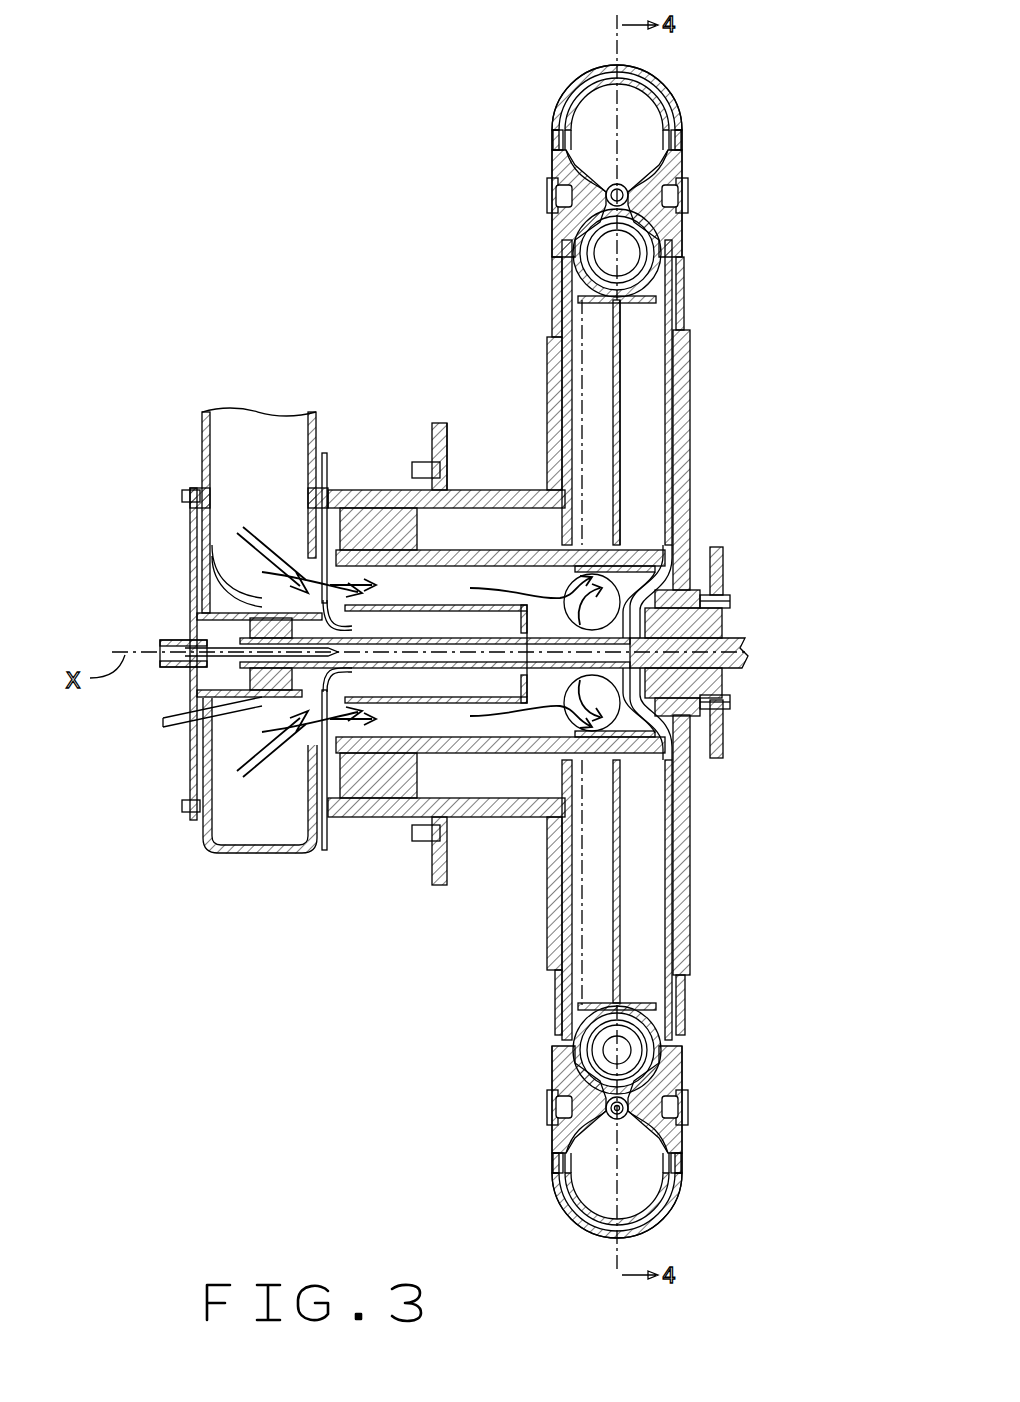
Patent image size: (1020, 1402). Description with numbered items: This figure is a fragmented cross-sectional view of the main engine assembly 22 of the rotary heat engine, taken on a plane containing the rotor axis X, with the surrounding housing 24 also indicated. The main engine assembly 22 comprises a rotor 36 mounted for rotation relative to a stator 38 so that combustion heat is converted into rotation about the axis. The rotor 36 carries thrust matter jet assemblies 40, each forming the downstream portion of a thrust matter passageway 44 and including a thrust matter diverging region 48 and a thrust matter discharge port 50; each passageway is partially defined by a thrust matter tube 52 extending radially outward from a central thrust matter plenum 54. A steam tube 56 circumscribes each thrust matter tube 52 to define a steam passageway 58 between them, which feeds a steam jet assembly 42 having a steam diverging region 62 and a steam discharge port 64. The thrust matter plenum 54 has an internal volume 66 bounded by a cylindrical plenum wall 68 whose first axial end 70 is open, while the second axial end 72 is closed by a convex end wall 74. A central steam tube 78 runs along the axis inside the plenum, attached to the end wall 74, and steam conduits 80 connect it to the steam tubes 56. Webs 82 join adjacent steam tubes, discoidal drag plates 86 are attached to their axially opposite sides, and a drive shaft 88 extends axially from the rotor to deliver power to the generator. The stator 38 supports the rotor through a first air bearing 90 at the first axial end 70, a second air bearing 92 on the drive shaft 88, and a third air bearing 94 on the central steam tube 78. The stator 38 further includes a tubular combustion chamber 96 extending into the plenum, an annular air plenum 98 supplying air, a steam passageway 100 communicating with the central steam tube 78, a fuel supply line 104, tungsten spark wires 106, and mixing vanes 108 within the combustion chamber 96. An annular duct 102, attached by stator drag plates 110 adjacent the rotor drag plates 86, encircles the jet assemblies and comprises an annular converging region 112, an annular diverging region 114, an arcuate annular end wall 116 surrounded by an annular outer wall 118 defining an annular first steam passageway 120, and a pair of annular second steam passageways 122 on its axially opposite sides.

The main engine assembly 22 is at (380, 158).
The housing 24 is at (432, 420).
The rotor 36 is at (652, 408).
The stator 38 is at (388, 820).
The thrust matter jet assembly 40 is at (662, 240).
The steam jet assembly 42 is at (607, 188).
The thrust matter passageway 44 is at (383, 580).
The thrust matter diverging region 48 is at (640, 1058).
The thrust matter discharge port 50 is at (592, 250).
The thrust matter tube 52 is at (658, 268).
The thrust matter plenum 54 is at (520, 720).
The steam tube 56 is at (570, 240).
The steam passageway 58 is at (588, 282).
The steam diverging region 62 is at (600, 1140).
The steam discharge port 64 is at (660, 166).
The internal volume 66 is at (400, 770).
The cylindrical plenum wall 68 is at (470, 520).
The first axial end 70 is at (342, 500).
The second axial end 72 is at (690, 610).
The end wall 74 is at (690, 700).
The central steam tube 78 is at (333, 745).
The steam conduit 80 is at (722, 606).
The web 82 is at (662, 350).
The drag plate 86 is at (560, 318).
The drive shaft 88 is at (730, 670).
The first air bearing 90 is at (396, 520).
The second air bearing 92 is at (748, 650).
The third air bearing 94 is at (245, 672).
The combustion chamber 96 is at (447, 445).
The annular air plenum 98 is at (212, 810).
The steam passageway 100 is at (172, 648).
The annular duct 102 is at (590, 130).
The fuel supply line 104 is at (190, 735).
The tungsten spark wire 106 is at (300, 520).
The mixing vane 108 is at (330, 450).
The drag plate 110 is at (690, 472).
The annular converging region 112 is at (556, 208).
The annular diverging region 114 is at (668, 122).
The annular end wall 116 is at (648, 76).
The annular outer wall 118 is at (581, 78).
The annular first steam passageway 120 is at (604, 72).
The annular second steam passageway 122 is at (690, 190).